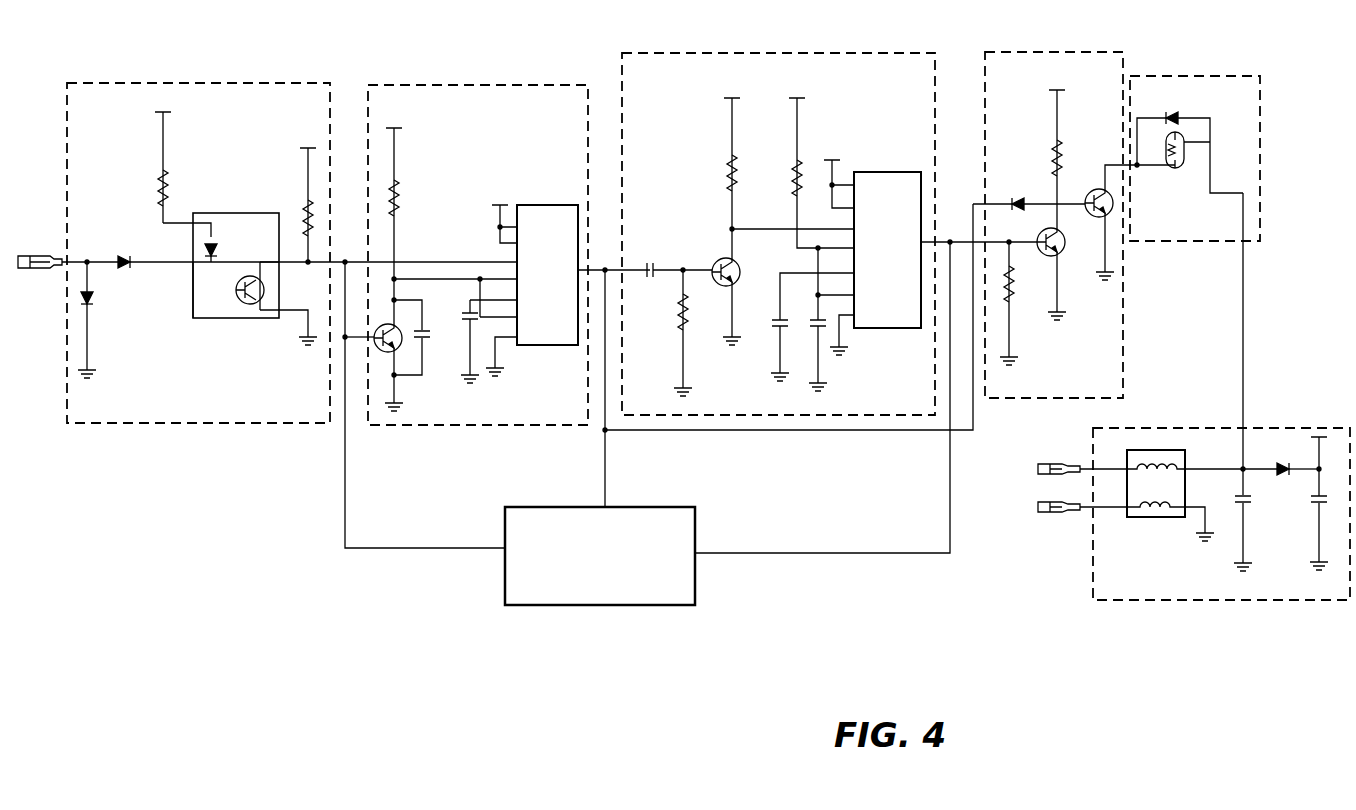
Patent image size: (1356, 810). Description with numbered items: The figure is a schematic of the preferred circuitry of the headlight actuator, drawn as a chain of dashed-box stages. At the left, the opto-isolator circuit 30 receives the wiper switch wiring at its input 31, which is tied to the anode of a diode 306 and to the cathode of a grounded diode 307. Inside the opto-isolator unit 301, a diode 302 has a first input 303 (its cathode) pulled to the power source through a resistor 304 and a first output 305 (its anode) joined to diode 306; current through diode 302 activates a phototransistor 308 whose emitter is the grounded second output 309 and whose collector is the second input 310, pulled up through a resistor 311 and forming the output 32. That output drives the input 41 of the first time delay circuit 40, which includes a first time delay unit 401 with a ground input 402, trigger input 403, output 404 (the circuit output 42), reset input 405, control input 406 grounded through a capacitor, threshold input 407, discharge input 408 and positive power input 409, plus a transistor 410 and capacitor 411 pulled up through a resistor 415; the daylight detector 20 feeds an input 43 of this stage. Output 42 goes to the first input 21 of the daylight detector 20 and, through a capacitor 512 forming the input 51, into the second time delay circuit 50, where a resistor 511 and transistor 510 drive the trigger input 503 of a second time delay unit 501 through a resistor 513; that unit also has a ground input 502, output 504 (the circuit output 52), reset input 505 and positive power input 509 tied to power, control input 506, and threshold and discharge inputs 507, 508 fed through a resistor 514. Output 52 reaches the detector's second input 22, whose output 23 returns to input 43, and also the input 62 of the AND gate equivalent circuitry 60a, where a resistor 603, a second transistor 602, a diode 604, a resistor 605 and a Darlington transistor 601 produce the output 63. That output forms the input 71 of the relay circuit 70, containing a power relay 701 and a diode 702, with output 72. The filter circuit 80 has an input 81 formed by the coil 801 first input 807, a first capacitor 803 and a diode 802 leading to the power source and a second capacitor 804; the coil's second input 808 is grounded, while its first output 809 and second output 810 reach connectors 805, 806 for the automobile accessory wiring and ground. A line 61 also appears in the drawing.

The daylight detector 20 is at (605, 607).
The first input 21 is at (607, 503).
The second input 22 is at (700, 556).
The output 23 is at (505, 546).
The opto-isolator circuit 30 is at (242, 82).
The input 31 is at (62, 262).
The output 32 is at (346, 258).
The first time delay circuit 40 is at (478, 82).
The input 41 is at (362, 260).
The output 42 is at (602, 266).
The input 43 is at (350, 338).
The second time delay circuit 50 is at (752, 52).
The input 51 is at (618, 272).
The output 52 is at (948, 238).
The equivalent circuitry 60a is at (1060, 50).
The line 61 is at (985, 200).
The input 62 is at (992, 246).
The output 63 is at (1122, 158).
The relay circuit 70 is at (1200, 74).
The input 71 is at (1137, 172).
The output 72 is at (1246, 245).
The filter circuit 80 is at (1198, 428).
The input 81 is at (1248, 428).
The opto-isolator unit 301 is at (240, 318).
The diode 302 is at (204, 246).
The first input 303 is at (205, 225).
The resistor 304 is at (160, 180).
The first output 305 is at (193, 268).
The diode 306 is at (124, 256).
The diode 307 is at (92, 302).
The phototransistor 308 is at (230, 286).
The second output 309 is at (282, 310).
The second input 310 is at (272, 262).
The resistor 311 is at (304, 206).
The first time delay unit 401 is at (565, 204).
The ground input 402 is at (510, 360).
The trigger input 403 is at (590, 269).
The output 404 is at (518, 293).
The reset input 405 is at (532, 241).
The control input 406 is at (523, 318).
The threshold input 407 is at (512, 266).
The discharge input 408 is at (520, 338).
The positive power input 409 is at (528, 218).
The transistor 410 is at (398, 360).
The capacitor 411 is at (430, 338).
The resistor 415 is at (400, 212).
The second time delay unit 501 is at (920, 170).
The ground input 502 is at (866, 340).
The trigger input 503 is at (819, 213).
The output 504 is at (888, 243).
The reset input 505 is at (869, 190).
The control input 506 is at (864, 295).
The threshold input 507 is at (841, 320).
The discharge input 508 is at (870, 318).
The positive power input 509 is at (861, 164).
The transistor 510 is at (722, 258).
The resistor 511 is at (678, 318).
The capacitor 512 is at (650, 260).
The resistor 513 is at (726, 170).
The resistor 514 is at (802, 232).
The Darlington transistor 601 is at (1090, 190).
The second transistor 602 is at (1065, 272).
The resistor 603 is at (1018, 308).
The diode 604 is at (1020, 194).
The resistor 605 is at (1052, 148).
The power relay 701 is at (1184, 163).
The diode 702 is at (1188, 100).
The coil 801 is at (1160, 517).
The diode 802 is at (1285, 455).
The first capacitor 803 is at (1232, 505).
The second capacitor 804 is at (1312, 502).
The connector 805 is at (1038, 469).
The connector 806 is at (1038, 507).
The first input 807 is at (1190, 468).
The second input 808 is at (1196, 508).
The first output 809 is at (1118, 468).
The second output 810 is at (1127, 505).